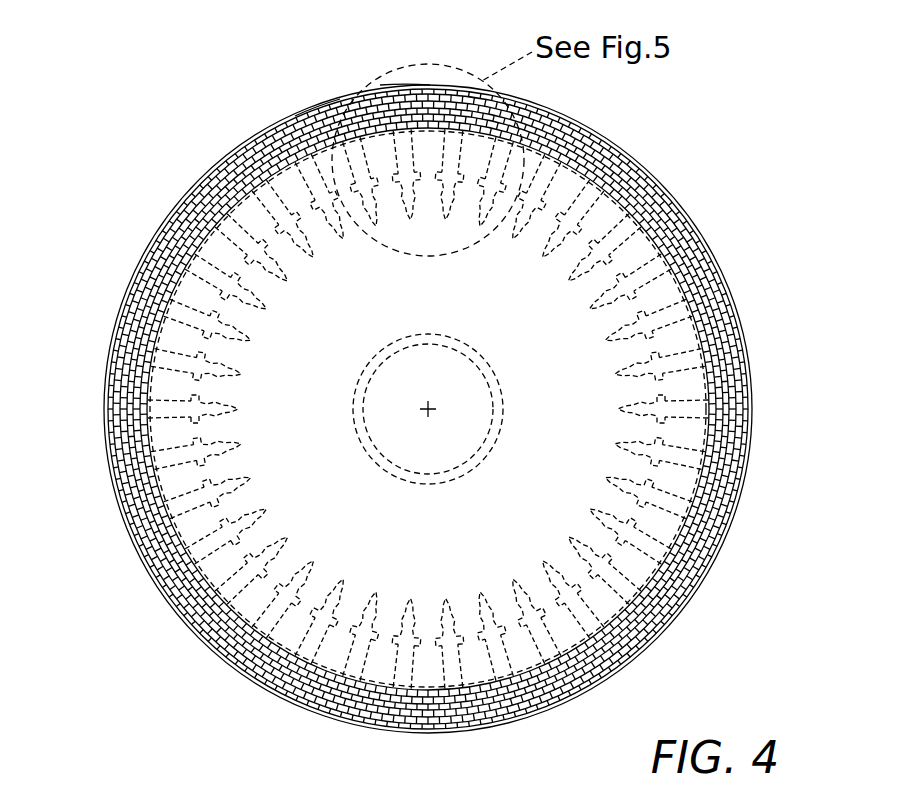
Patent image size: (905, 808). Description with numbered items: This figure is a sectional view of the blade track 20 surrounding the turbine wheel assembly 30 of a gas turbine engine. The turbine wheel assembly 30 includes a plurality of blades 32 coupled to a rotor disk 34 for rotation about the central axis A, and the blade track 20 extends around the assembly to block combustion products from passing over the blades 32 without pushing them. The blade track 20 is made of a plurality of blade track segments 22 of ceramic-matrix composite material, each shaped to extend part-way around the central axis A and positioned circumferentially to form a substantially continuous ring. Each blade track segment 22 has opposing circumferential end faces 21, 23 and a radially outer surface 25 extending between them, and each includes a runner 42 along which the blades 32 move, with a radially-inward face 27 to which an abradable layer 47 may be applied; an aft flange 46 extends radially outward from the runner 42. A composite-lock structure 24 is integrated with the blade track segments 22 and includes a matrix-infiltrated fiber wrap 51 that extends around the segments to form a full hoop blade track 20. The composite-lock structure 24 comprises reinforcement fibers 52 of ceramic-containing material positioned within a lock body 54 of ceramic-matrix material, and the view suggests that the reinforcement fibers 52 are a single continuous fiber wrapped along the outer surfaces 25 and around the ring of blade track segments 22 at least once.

The blade track 20 is at (633, 146).
The circumferential end face 21 is at (302, 112).
The blade track segment 22 is at (349, 91).
The circumferential end face 23 is at (404, 84).
The composite-lock structure 24 is at (270, 132).
The radially outer surface 25 is at (207, 171).
The radially-inward face 27 is at (148, 341).
The turbine wheel assembly 30 is at (583, 353).
The blade 32 is at (647, 297).
The rotor disk 34 is at (560, 293).
The runner 42 is at (713, 330).
The aft flange 46 is at (131, 255).
The abradable layer 47 is at (718, 388).
The matrix-infiltrated fiber wrap 51 is at (179, 193).
The reinforcement fiber 52 is at (162, 228).
The lock body 54 is at (183, 196).
The central axis A is at (431, 412).